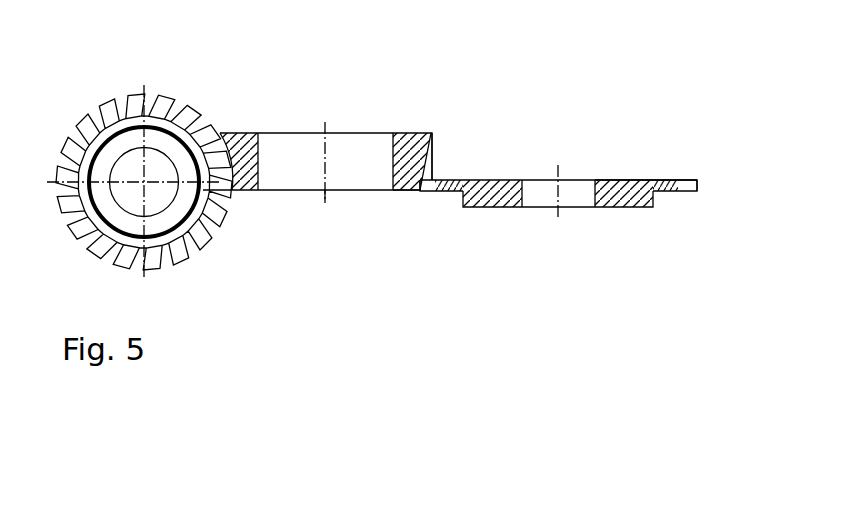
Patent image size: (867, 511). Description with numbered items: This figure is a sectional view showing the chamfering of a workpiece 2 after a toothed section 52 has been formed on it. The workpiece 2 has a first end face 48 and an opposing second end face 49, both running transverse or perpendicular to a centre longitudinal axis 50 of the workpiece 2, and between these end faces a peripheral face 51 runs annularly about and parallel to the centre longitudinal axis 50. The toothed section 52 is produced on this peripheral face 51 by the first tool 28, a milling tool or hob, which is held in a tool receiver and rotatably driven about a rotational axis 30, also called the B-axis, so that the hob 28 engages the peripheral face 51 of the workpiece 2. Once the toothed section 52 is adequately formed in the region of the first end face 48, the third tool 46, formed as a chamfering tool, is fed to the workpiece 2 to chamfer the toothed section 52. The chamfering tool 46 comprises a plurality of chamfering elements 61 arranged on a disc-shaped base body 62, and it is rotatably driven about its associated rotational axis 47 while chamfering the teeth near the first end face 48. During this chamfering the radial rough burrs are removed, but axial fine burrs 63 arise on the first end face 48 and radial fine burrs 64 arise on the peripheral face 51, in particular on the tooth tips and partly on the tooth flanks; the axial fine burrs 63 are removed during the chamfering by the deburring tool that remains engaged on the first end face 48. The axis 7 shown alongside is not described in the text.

The workpiece 2 is at (283, 109).
The axis of rotation 7 is at (325, 124).
The first tool 28 is at (135, 100).
The rotational axis 30 is at (144, 182).
The third tool 46 is at (519, 178).
The rotational axis 47 is at (557, 212).
The first end face 48 is at (408, 193).
The second end face 49 is at (403, 135).
The centre longitudinal axis 50 is at (325, 196).
The peripheral face 51 is at (432, 133).
The toothed section 52 is at (436, 151).
The chamfering elements 61 is at (440, 192).
The disc-shaped base body 62 is at (603, 183).
The axial fine burrs 63 is at (230, 192).
The radial fine burrs 64 is at (216, 138).